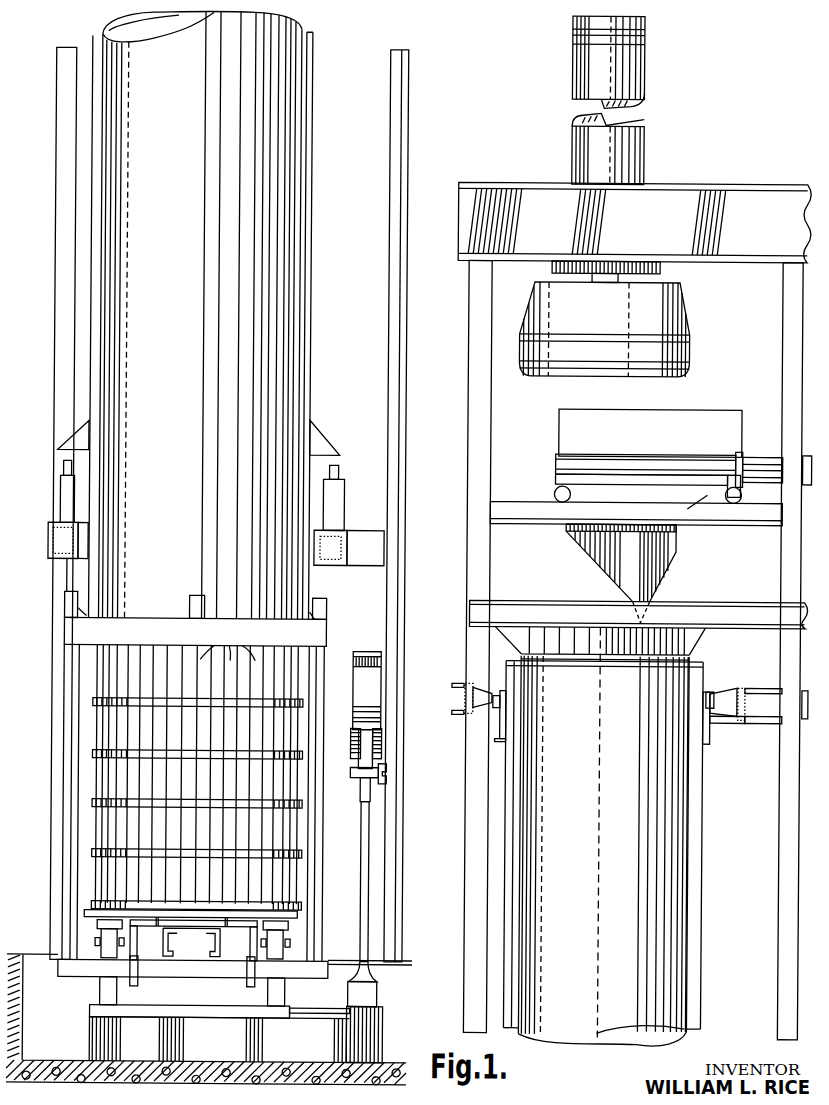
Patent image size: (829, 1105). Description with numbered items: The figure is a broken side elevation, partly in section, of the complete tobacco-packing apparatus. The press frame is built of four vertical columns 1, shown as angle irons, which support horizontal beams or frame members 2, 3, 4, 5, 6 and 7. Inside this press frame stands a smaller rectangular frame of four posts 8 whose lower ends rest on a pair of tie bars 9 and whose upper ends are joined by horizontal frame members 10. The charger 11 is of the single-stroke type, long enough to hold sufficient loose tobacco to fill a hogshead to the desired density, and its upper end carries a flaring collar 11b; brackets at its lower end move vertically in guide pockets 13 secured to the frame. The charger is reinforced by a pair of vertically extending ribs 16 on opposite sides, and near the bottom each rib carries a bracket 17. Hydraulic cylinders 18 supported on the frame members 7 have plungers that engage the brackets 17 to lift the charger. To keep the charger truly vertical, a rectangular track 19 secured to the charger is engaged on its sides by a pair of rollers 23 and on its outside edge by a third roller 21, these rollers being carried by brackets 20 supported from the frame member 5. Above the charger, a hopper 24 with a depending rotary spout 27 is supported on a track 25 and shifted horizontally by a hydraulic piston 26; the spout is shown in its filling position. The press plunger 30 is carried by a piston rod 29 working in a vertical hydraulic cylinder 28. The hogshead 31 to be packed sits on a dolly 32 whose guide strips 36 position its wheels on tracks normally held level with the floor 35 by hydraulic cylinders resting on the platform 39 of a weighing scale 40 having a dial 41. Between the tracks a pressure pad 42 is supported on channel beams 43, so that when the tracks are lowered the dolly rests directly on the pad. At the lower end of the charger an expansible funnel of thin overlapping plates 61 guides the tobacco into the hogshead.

The vertical column 1 is at (55, 309).
The horizontal beam 2 is at (742, 197).
The horizontal beam 3 is at (741, 610).
The horizontal beam 4 is at (769, 714).
The horizontal frame member 5 is at (749, 716).
The horizontal beam 6 is at (363, 540).
The horizontal frame member 7 is at (343, 565).
The post 8 is at (72, 725).
The tie bar 9 is at (75, 966).
The horizontal frame member 10 is at (145, 628).
The charger 11 is at (275, 164).
The flaring collar 11b is at (702, 640).
The guide pocket 13 is at (320, 610).
The vertically extending rib 16 is at (305, 276).
The bracket 17 is at (315, 444).
The hydraulic cylinder 18 is at (342, 491).
The rectangular track 19 is at (503, 722).
The bracket 20 is at (479, 691).
The third roller 21 is at (499, 716).
The roller 23 is at (708, 695).
The hopper 24 is at (707, 418).
The track 25 is at (721, 516).
The hydraulic piston 26 is at (762, 452).
The rotary spout 27 is at (642, 611).
The vertical hydraulic cylinder 28 is at (638, 66).
The piston rod 29 is at (624, 118).
The press plunger 30 is at (668, 329).
The hogshead 31 is at (277, 792).
The dolly 32 is at (90, 914).
The floor 35 is at (343, 958).
The guide strip 36 is at (126, 918).
The platform 39 is at (205, 992).
The weighing scale 40 is at (328, 1016).
The dial 41 is at (354, 684).
The pressure pad 42 is at (190, 924).
The channel beam 43 is at (172, 944).
The overlapping metal plate 61 is at (227, 642).